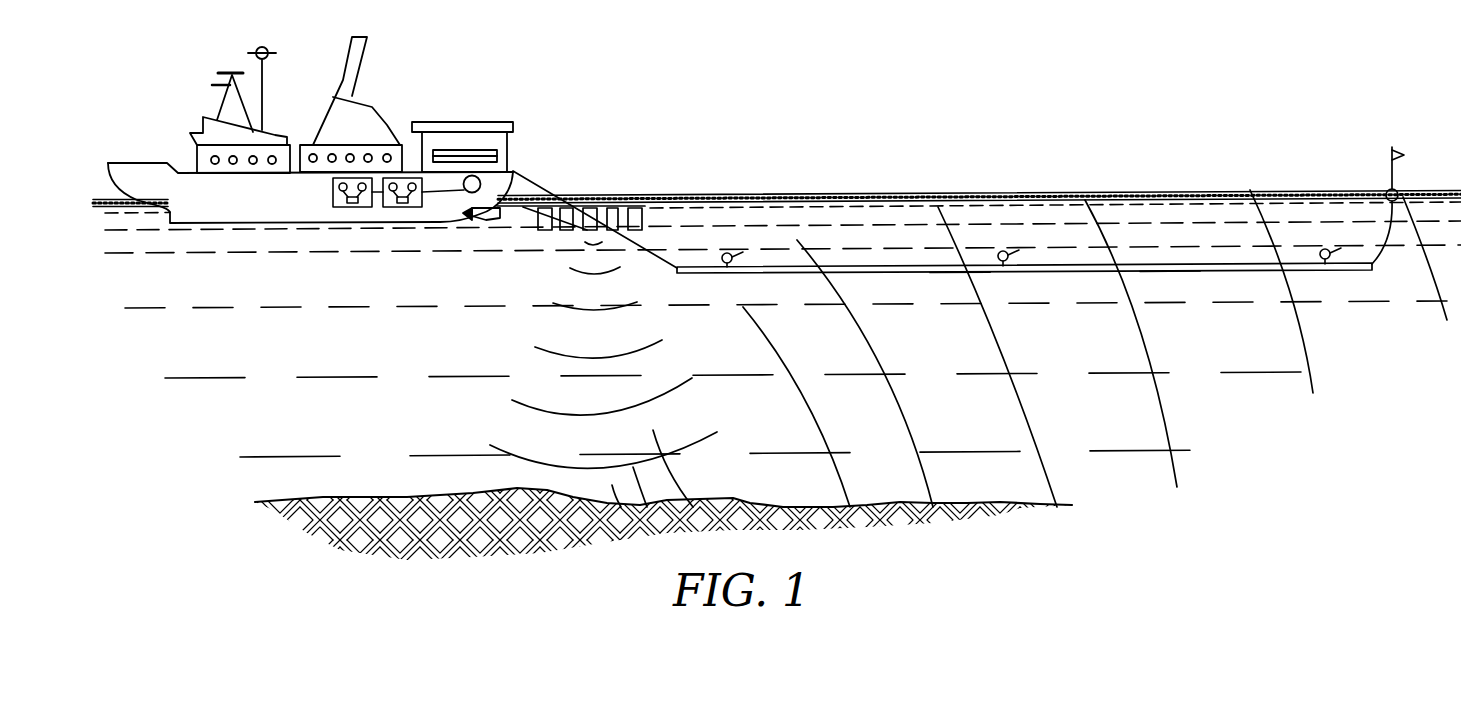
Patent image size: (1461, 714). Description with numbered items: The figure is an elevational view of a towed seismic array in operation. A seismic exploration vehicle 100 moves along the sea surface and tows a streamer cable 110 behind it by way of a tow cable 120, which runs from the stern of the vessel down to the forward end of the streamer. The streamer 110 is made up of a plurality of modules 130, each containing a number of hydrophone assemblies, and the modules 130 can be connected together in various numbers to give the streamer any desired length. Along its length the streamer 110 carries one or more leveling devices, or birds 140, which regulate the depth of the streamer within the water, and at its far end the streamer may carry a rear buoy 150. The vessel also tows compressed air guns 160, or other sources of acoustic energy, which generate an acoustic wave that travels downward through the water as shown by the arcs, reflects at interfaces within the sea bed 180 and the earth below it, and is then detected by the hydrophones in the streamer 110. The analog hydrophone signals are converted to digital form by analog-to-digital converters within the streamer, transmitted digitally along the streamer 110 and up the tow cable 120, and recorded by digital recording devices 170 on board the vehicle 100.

The seismic exploration vehicle 100 is at (152, 172).
The streamer cable 110 is at (1236, 279).
The tow cable 120 is at (541, 199).
The module 130 is at (955, 274).
The leveling device (bird) 140 is at (731, 252).
The rear buoy 150 is at (1389, 191).
The compressed air gun 160 is at (586, 208).
The digital recording device 170 is at (333, 193).
The sea bed 180 is at (345, 496).